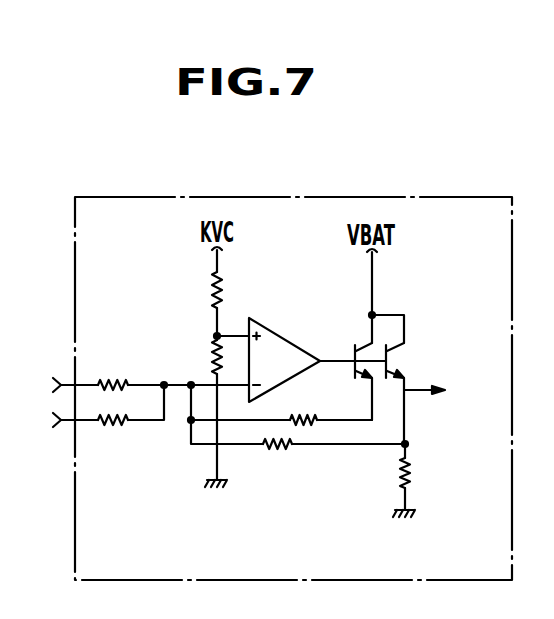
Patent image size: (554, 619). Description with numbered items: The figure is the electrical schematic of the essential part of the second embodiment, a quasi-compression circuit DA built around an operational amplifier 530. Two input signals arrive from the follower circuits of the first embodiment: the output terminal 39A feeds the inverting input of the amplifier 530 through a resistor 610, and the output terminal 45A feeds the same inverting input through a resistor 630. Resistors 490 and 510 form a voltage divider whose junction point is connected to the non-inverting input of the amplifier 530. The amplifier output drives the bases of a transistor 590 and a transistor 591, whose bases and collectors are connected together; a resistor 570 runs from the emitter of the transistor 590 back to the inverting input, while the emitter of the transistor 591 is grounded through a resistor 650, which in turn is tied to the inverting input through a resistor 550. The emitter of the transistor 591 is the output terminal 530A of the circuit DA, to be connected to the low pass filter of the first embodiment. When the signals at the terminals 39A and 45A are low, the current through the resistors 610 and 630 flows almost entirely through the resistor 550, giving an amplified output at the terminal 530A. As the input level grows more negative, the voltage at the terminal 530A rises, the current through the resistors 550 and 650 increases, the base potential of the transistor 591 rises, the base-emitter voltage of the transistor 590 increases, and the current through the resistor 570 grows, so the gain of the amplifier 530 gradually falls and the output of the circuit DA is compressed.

The quasi-compression circuit DA is at (390, 197).
The resistor 490 is at (212, 291).
The resistor 510 is at (212, 366).
The operational amplifier 530 is at (284, 360).
The output terminal 530A is at (447, 390).
The resistor 550 is at (277, 450).
The resistor 570 is at (306, 417).
The transistor 590 is at (367, 346).
The transistor 591 is at (398, 359).
The resistor 610 is at (113, 378).
The resistor 630 is at (117, 428).
The resistor 650 is at (411, 464).
The output terminal 39A is at (61, 378).
The output terminal 45A is at (61, 428).